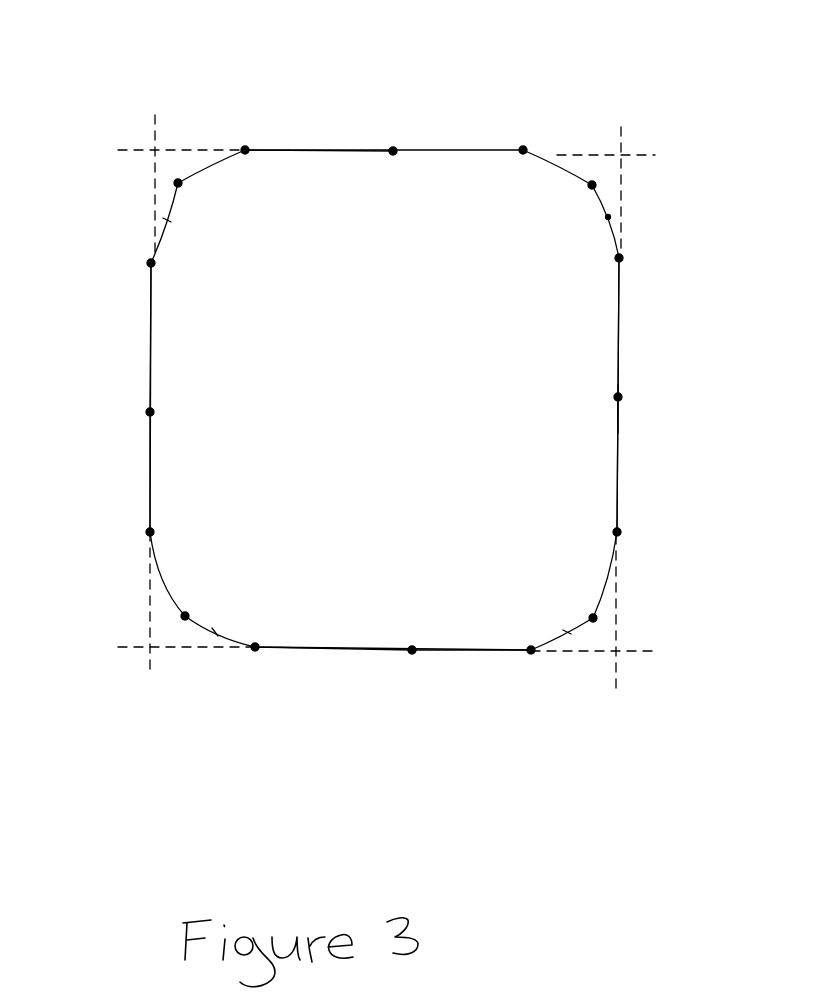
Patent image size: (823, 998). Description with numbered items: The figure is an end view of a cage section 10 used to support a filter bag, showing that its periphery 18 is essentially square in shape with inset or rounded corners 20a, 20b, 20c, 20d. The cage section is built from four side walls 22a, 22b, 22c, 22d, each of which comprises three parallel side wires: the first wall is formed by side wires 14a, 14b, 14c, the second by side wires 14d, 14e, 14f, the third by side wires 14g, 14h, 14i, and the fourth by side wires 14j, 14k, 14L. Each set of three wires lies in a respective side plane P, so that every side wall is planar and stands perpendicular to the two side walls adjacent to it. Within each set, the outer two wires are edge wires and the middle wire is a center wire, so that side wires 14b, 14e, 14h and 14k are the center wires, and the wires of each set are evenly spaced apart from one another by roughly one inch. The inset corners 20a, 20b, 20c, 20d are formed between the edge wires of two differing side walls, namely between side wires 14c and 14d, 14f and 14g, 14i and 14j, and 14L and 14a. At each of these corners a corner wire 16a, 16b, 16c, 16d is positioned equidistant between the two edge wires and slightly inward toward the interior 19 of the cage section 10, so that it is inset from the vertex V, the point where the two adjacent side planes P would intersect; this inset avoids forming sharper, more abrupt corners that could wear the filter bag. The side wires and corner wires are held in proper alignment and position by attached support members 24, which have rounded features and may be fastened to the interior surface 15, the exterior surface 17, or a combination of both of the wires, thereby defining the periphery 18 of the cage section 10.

The cage section 10 is at (445, 147).
The side wire 14a is at (245, 150).
The side wire 14b is at (393, 151).
The side wire 14c is at (523, 150).
The side wire 14d is at (619, 258).
The side wire 14e is at (618, 397).
The side wire 14f is at (617, 532).
The side wire 14g is at (531, 650).
The side wire 14h is at (412, 650).
The side wire 14i is at (255, 647).
The side wire 14j is at (150, 532).
The side wire 14k is at (150, 412).
The side wire 14L is at (151, 263).
The interior surface 15 is at (618, 397).
The corner wire 16a is at (592, 185).
The corner wire 16b is at (593, 618).
The corner wire 16c is at (185, 616).
The corner wire 16d is at (178, 183).
The exterior surface 17 is at (618, 397).
The periphery 18 is at (619, 337).
The interior 19 is at (188, 340).
The inset corner 20a is at (608, 217).
The inset corner 20b is at (567, 632).
The inset corner 20c is at (215, 632).
The inset corner 20d is at (167, 220).
The side wall 22a is at (300, 152).
The side wall 22b is at (619, 463).
The side wall 22c is at (335, 648).
The side wall 22d is at (148, 467).
The support member 24 is at (460, 650).
The side plane P is at (570, 148).
The vertex V is at (58, 762).